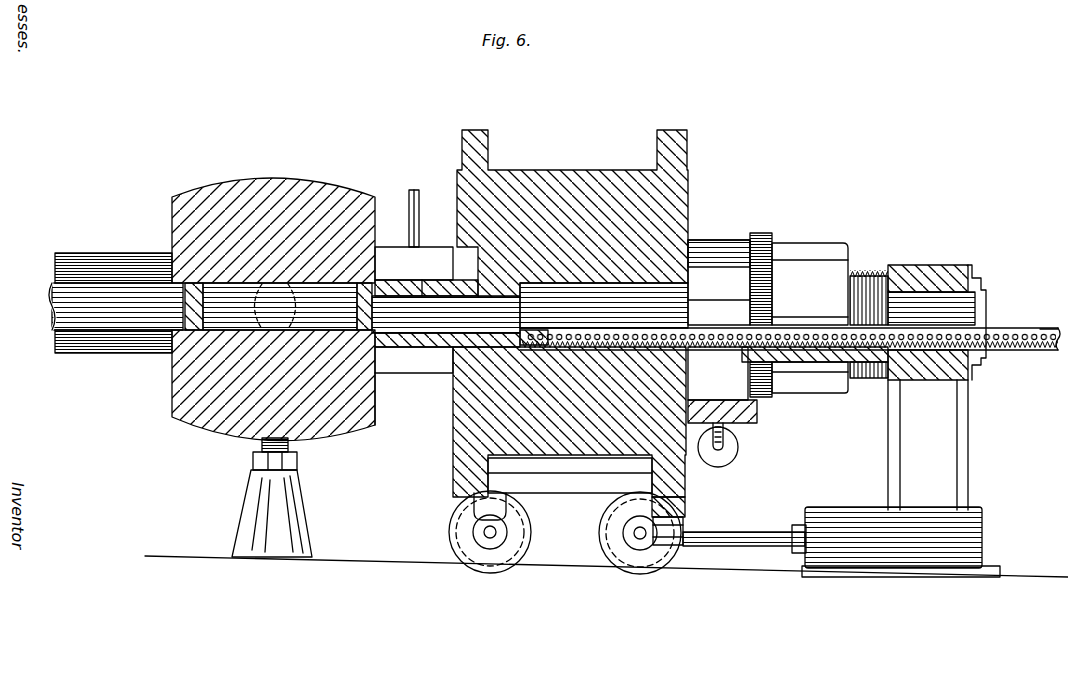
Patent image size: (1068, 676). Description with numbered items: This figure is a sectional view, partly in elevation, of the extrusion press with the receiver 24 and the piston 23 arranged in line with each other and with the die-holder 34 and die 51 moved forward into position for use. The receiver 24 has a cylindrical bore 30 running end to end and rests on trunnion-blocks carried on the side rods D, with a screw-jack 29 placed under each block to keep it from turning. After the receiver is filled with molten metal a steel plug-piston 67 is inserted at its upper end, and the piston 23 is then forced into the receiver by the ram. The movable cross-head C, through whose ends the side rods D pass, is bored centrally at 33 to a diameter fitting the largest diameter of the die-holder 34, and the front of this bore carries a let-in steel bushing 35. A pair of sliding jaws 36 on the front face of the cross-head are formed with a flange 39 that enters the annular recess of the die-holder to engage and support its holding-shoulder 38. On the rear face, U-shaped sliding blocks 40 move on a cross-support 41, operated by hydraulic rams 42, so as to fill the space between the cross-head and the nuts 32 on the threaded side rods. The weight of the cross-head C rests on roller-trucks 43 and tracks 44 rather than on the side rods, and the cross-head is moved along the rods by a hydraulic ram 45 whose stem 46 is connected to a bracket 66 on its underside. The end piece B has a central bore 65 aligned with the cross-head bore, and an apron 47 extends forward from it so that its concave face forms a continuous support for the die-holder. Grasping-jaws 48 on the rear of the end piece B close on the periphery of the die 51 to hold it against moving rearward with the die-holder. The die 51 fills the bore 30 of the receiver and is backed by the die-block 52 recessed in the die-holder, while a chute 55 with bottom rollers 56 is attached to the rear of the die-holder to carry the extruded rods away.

The piston 23 is at (50, 299).
The receiver 24 is at (172, 415).
The screw-jack 29 is at (251, 472).
The cylindrical bore 30 is at (306, 283).
The nut 32 is at (810, 318).
The central bore 33 is at (690, 302).
The die-holder 34 is at (414, 360).
The steel bushing 35 is at (449, 255).
The sliding jaws 36 is at (414, 263).
The holding-shoulder 38 is at (428, 283).
The flange 39 is at (437, 340).
The sliding blocks 40 is at (727, 241).
The cross-support 41 is at (760, 412).
The hydraulic rams 42 is at (740, 452).
The roller-trucks 43 is at (590, 485).
The tracks 44 is at (572, 565).
The hydraulic ram 45 is at (860, 494).
The stem 46 is at (759, 531).
The apron 47 is at (743, 358).
The grasping-jaws 48 is at (975, 311).
The die 51 is at (373, 381).
The die-block 52 is at (378, 328).
The chute 55 is at (1032, 327).
The bottom rollers 56 is at (1016, 335).
The central bore 65 is at (938, 292).
The bracket 66 is at (686, 510).
The steel plug-piston 67 is at (192, 283).
The end piece B is at (976, 270).
The movable cross-head C is at (578, 172).
The side rods D is at (130, 344).